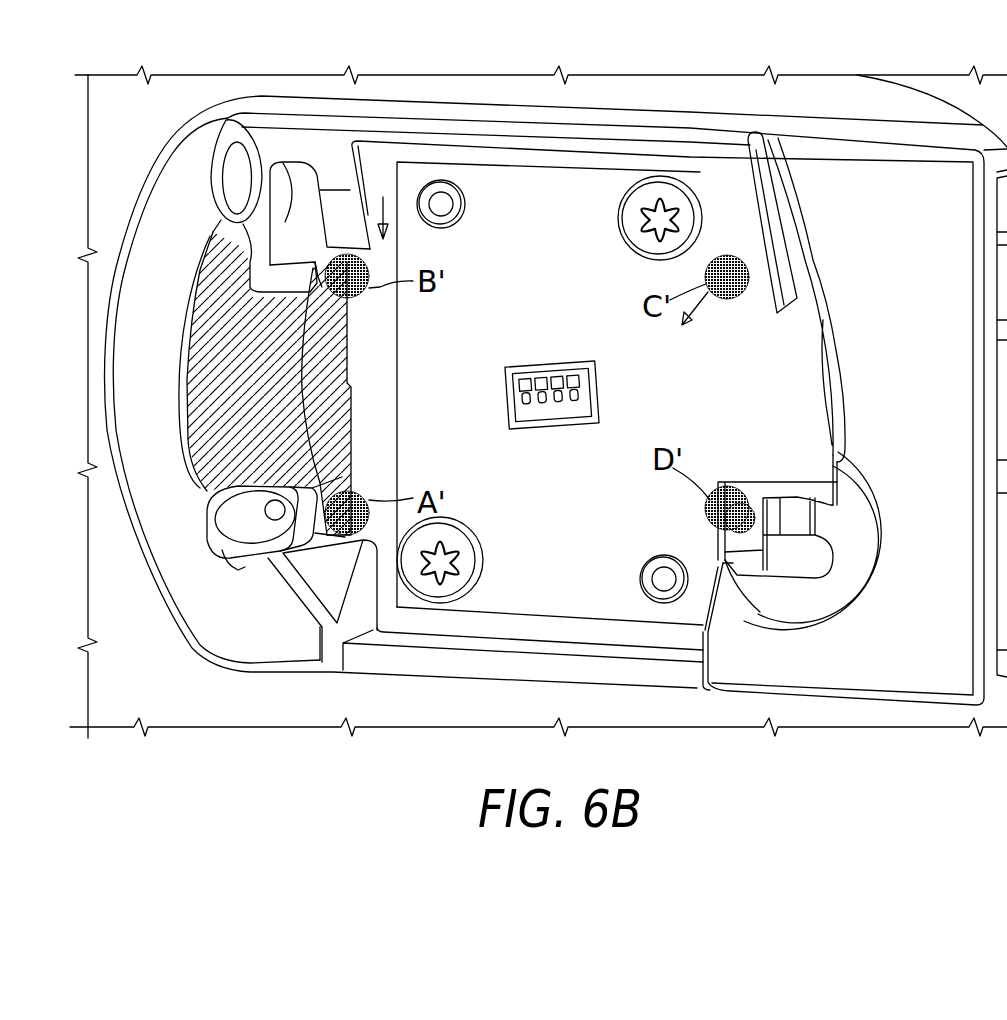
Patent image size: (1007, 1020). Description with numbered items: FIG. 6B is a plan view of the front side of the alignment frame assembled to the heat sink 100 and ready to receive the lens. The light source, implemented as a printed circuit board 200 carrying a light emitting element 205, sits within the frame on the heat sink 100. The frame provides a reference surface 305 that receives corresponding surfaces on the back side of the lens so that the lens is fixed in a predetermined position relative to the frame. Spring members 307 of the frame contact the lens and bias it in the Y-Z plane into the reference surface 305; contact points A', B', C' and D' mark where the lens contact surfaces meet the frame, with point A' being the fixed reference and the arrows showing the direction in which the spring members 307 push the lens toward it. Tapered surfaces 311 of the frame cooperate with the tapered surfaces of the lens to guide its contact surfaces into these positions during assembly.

The heat sink 100 is at (173, 703).
The printed circuit board 200 is at (710, 395).
The light emitting element 205 is at (538, 358).
The reference surface 305 is at (333, 415).
The spring member 307 is at (337, 210).
The tapered surface 311 is at (190, 437).